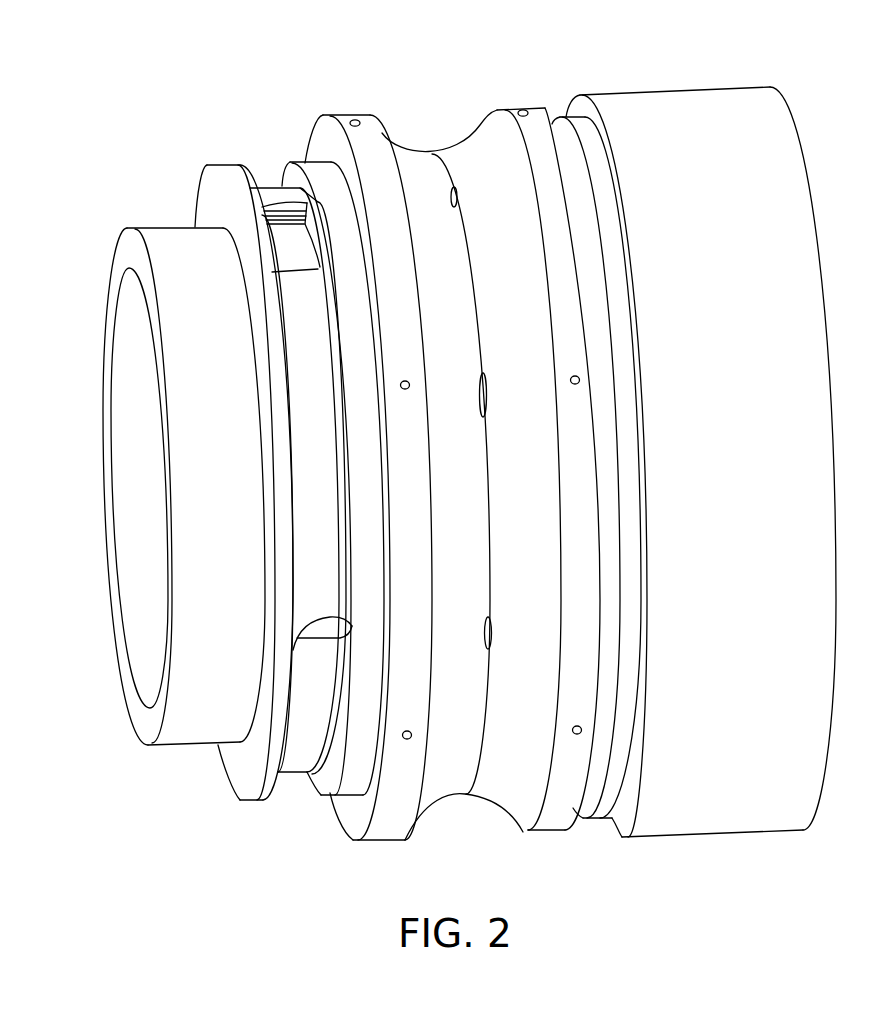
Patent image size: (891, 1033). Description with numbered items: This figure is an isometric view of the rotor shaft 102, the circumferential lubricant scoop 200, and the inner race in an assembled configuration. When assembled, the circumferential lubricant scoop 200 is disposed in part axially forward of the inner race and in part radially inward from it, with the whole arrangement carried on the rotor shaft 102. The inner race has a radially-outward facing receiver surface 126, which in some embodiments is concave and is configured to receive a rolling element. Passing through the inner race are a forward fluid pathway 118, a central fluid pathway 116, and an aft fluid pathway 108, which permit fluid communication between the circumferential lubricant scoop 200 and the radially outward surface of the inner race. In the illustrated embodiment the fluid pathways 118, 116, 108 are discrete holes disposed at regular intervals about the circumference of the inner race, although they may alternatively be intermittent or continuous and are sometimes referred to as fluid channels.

The rotor shaft 102 is at (116, 245).
The aft fluid pathway 108 is at (522, 102).
The central fluid pathway 116 is at (440, 197).
The forward fluid pathway 118 is at (352, 104).
The receiver surface 126 is at (477, 131).
The circumferential lubricant scoop 200 is at (238, 830).